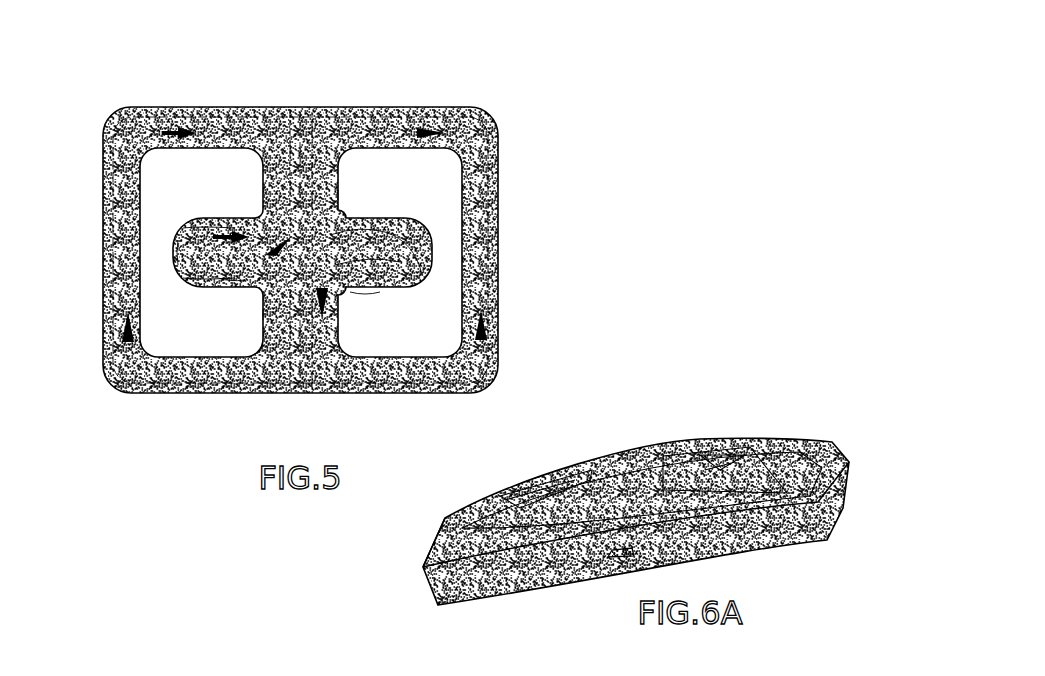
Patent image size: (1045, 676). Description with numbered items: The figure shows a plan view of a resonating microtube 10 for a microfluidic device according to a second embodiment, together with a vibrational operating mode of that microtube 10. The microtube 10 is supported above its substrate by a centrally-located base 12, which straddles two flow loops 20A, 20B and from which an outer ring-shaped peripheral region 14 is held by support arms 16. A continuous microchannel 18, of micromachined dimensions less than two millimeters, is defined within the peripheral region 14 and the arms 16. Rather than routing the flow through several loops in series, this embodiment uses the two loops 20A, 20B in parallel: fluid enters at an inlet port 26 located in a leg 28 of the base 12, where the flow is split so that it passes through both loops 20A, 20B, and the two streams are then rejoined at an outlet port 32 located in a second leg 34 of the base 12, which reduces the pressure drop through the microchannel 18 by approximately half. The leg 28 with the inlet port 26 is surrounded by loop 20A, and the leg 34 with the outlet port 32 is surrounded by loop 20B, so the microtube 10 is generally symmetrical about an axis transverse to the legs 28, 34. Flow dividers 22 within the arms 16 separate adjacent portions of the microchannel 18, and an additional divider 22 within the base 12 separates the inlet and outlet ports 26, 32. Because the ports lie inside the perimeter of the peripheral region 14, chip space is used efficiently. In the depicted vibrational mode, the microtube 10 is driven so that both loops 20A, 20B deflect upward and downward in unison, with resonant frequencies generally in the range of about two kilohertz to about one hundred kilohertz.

In FIG. 5, the microtube 10 is at (284, 66).
In FIG. 6A, the microtube 10 is at (643, 402).
In FIG. 5, the peripheral region 14 is at (397, 88).
In FIG. 5, the divider 22 is at (258, 118).
In FIG. 5, the base 12 is at (232, 206).
In FIG. 6A, the base 12 is at (625, 560).
In FIG. 5, the arms 16 is at (340, 189).
In FIG. 5, the inlet port 26 is at (410, 240).
In FIG. 5, the microchannel 18 is at (478, 226).
In FIG. 5, the loop 20A is at (440, 300).
In FIG. 6A, the loop 20A is at (786, 460).
In FIG. 5, the loop 20B is at (157, 333).
In FIG. 6A, the loop 20B is at (442, 520).
In FIG. 5, the outlet port 32 is at (180, 265).
In FIG. 5, the second leg 34 is at (230, 290).
In FIG. 5, the leg 28 is at (370, 291).